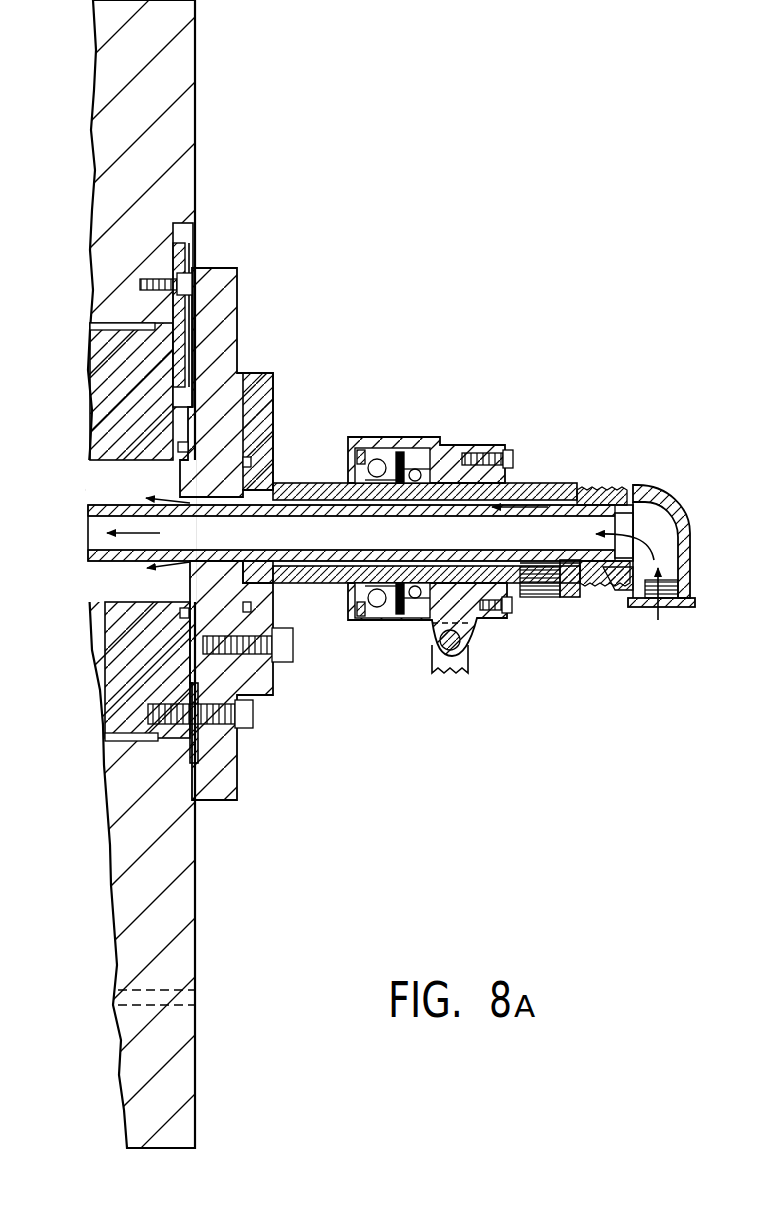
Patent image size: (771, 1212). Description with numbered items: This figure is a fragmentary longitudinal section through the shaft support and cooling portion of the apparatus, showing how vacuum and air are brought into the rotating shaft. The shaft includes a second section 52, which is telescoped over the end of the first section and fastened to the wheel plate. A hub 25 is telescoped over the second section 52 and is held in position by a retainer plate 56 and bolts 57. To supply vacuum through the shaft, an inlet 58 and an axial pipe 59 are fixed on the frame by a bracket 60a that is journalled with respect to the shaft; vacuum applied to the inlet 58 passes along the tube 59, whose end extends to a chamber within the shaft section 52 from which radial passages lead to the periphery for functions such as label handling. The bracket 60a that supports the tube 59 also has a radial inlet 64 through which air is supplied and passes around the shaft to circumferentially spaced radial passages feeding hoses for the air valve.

The hub 25 is at (183, 168).
The second section 52 is at (115, 383).
The retainer plate 56 is at (221, 313).
The bolts 57 is at (258, 714).
The inlet 58 is at (645, 518).
The axial pipe 59 is at (537, 498).
The bracket 60a is at (478, 640).
The radial inlet 64 is at (558, 598).